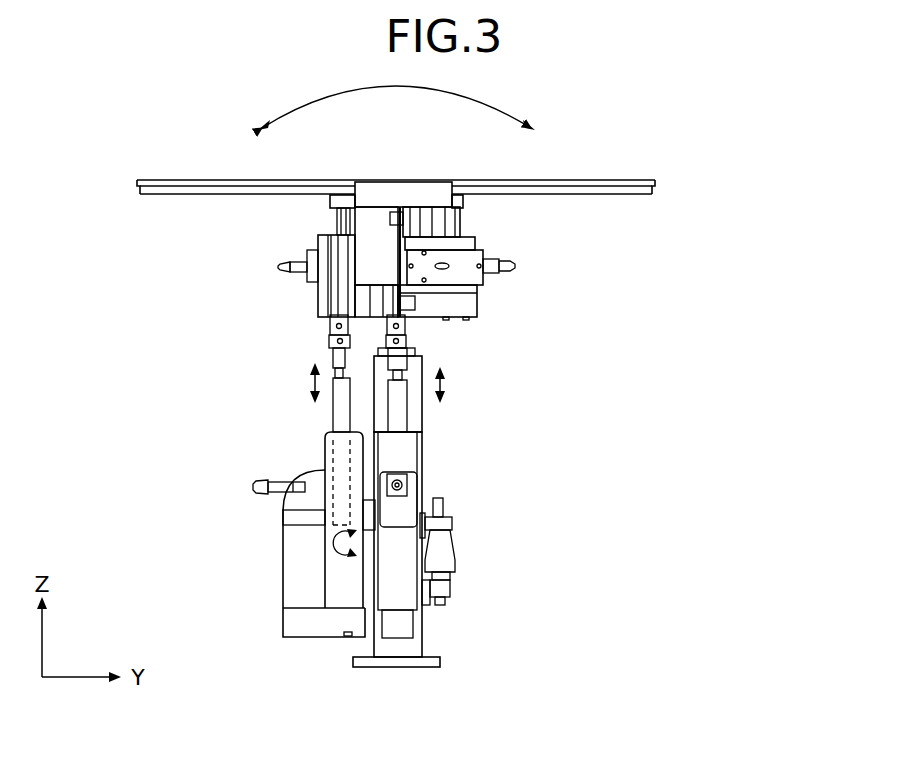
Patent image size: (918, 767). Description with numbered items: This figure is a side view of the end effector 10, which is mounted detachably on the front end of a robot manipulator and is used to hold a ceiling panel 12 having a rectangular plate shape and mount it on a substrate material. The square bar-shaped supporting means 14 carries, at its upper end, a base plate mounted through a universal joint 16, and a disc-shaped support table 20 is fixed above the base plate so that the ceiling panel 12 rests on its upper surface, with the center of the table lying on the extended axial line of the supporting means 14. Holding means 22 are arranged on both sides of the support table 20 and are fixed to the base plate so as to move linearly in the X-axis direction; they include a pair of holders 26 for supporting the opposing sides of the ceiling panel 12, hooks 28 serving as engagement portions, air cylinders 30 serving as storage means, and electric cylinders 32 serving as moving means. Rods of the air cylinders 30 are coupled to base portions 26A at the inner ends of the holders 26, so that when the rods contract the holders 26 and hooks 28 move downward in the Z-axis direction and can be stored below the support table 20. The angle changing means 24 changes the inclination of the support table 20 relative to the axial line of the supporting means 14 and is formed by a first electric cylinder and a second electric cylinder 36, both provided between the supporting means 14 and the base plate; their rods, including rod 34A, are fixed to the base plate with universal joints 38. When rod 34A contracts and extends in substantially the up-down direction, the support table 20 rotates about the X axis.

The end effector 10 is at (214, 494).
The ceiling panel 12 is at (183, 180).
The supporting means 14 is at (412, 410).
The universal joint 16 is at (408, 340).
The support table 20 is at (338, 200).
The holding means 22 is at (575, 198).
The angle changing means 24 is at (364, 507).
The holder 26 is at (465, 205).
The base portion 26A is at (372, 222).
The hook 28 is at (465, 195).
The air cylinder 30 is at (370, 300).
The electric cylinder 32 is at (468, 303).
The rod 34A is at (332, 322).
The electric cylinder 36 is at (420, 355).
The universal joint 38 is at (407, 330).